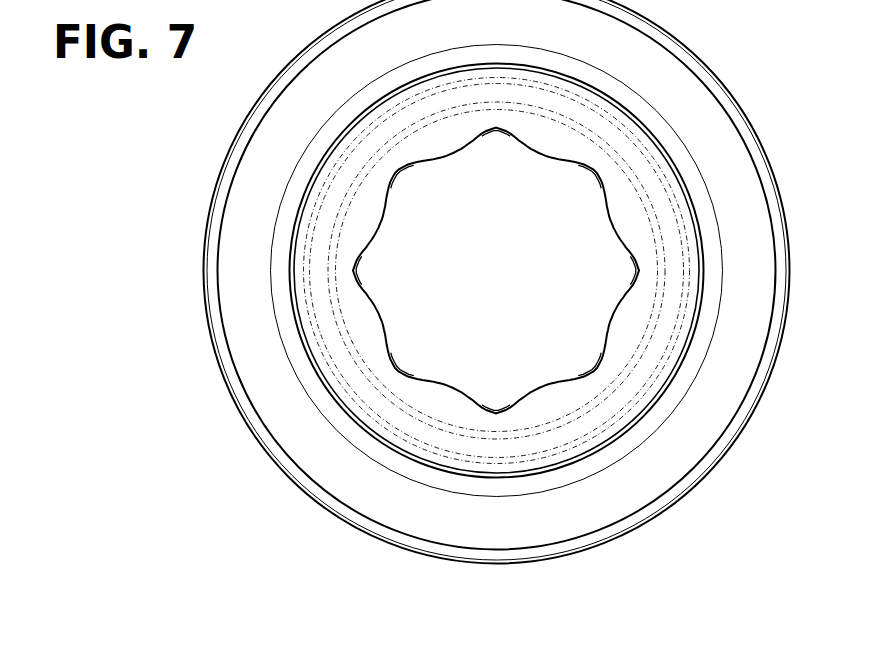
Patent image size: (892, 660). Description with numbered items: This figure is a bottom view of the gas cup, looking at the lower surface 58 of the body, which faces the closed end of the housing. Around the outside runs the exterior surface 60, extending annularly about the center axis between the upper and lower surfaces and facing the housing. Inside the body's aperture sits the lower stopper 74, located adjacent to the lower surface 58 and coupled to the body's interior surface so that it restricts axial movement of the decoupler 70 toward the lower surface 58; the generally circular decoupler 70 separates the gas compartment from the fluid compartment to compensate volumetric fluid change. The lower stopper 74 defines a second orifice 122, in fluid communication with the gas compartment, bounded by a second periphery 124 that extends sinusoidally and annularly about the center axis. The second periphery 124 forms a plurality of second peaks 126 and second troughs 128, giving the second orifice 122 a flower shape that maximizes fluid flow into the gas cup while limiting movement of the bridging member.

The lower surface 58 is at (718, 145).
The exterior surface 60 is at (203, 275).
The decoupler 70 is at (515, 277).
The lower stopper 74 is at (560, 143).
The second orifice 122 is at (477, 133).
The second periphery 124 is at (434, 162).
The second peaks 126 is at (603, 172).
The second troughs 128 is at (355, 265).